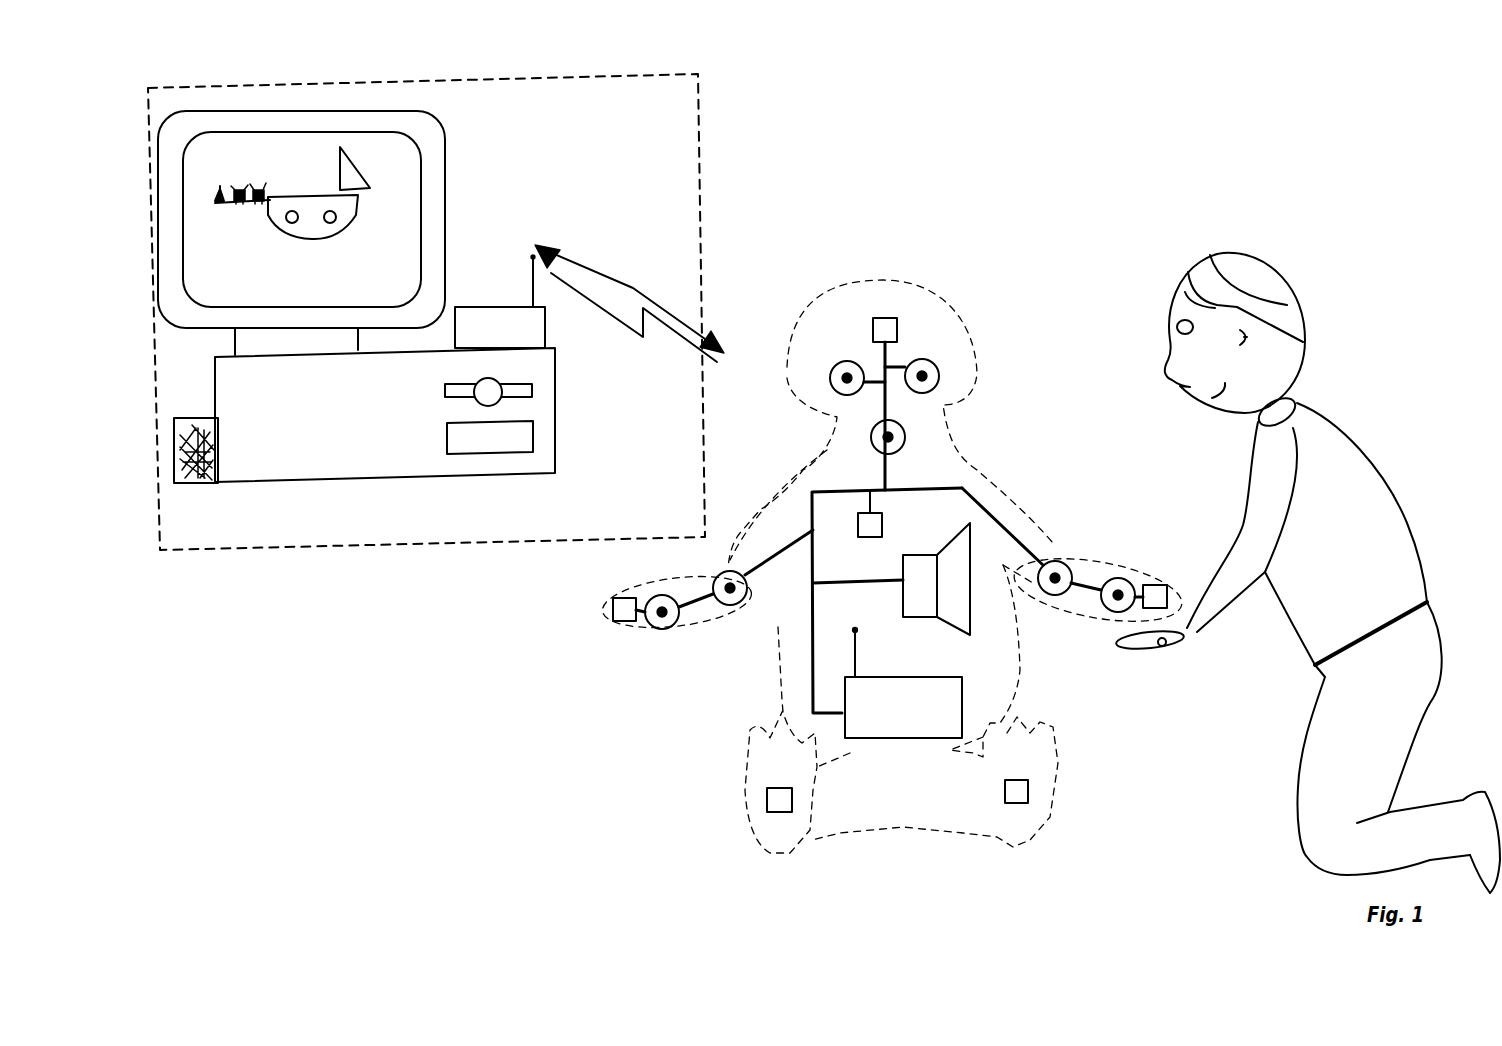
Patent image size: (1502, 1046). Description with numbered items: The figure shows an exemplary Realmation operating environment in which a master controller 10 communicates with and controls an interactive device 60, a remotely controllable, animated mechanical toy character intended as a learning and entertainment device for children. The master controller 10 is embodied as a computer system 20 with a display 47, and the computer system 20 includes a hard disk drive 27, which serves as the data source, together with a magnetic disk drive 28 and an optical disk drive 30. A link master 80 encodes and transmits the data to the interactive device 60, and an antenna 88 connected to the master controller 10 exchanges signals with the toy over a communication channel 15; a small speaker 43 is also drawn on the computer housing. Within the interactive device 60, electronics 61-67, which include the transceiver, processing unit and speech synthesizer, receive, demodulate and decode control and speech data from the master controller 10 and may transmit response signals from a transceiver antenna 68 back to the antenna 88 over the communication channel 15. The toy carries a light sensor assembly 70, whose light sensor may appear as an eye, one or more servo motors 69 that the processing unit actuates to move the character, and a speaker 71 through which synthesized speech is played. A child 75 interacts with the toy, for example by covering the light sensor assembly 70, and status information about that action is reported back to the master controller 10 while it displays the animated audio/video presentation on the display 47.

The master controller 10 is at (437, 311).
The display 47 is at (443, 145).
The computer system 20 is at (385, 415).
The link master 80 is at (482, 305).
The antenna 88 is at (532, 280).
The communication channel 15 is at (629, 303).
The magnetic disk drive 28 is at (527, 383).
The optical disk drive 30 is at (488, 390).
The hard disk drive 27 is at (533, 440).
The speaker 43 is at (202, 483).
The interactive device 60 is at (893, 551).
The light sensor assembly 70 is at (897, 322).
The servo motors 69 is at (939, 367).
The speaker 71 is at (972, 618).
The transceiver and processing electronics 61-67 is at (903, 707).
The transceiver antenna 68 is at (858, 658).
The child 75 is at (1382, 460).